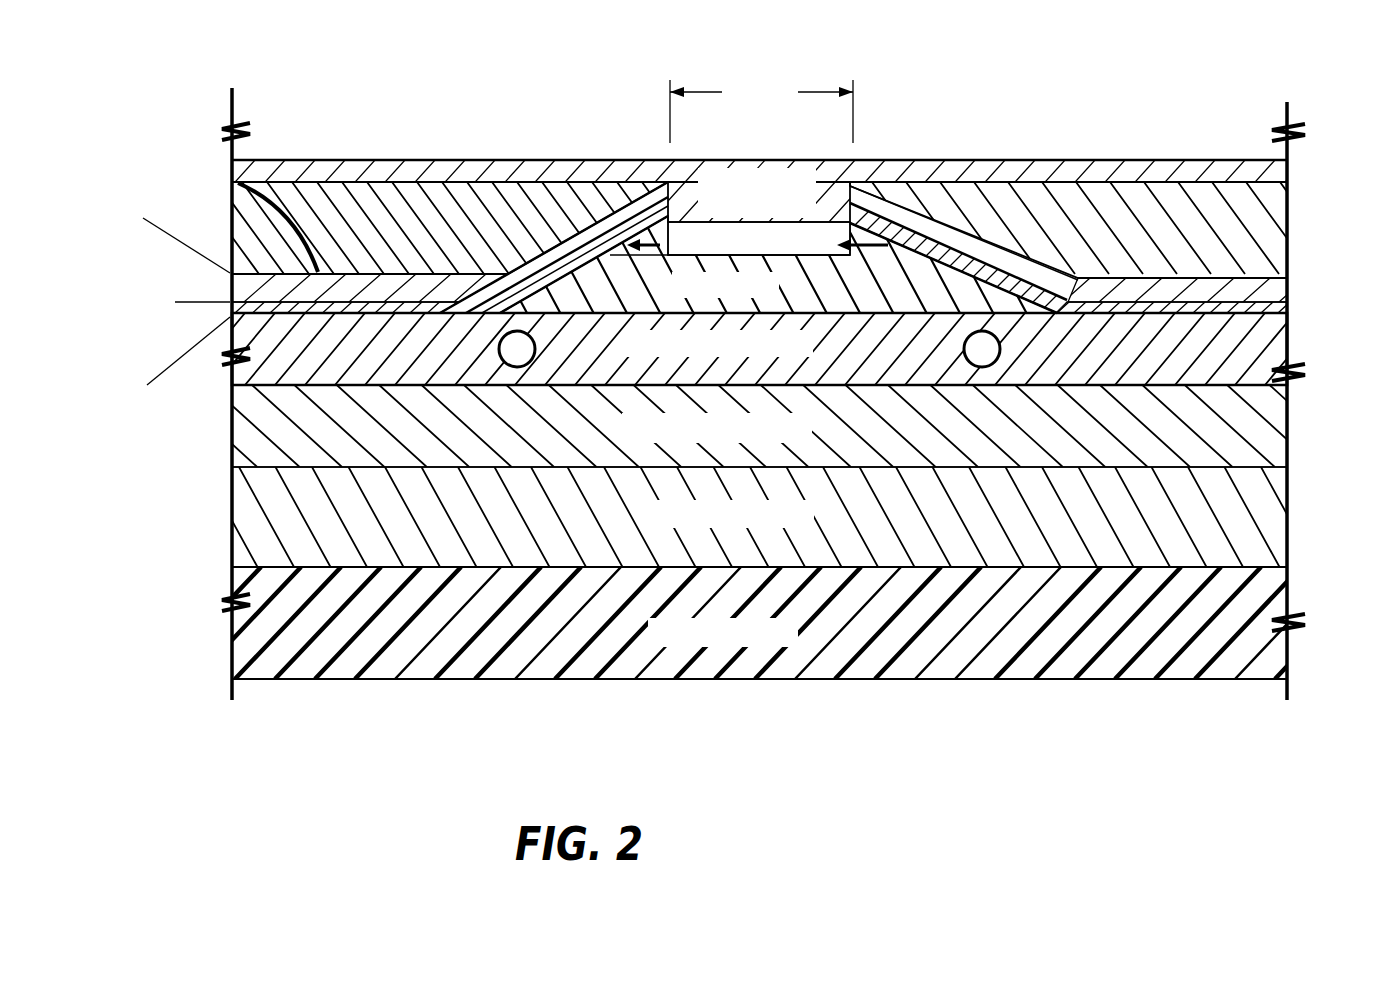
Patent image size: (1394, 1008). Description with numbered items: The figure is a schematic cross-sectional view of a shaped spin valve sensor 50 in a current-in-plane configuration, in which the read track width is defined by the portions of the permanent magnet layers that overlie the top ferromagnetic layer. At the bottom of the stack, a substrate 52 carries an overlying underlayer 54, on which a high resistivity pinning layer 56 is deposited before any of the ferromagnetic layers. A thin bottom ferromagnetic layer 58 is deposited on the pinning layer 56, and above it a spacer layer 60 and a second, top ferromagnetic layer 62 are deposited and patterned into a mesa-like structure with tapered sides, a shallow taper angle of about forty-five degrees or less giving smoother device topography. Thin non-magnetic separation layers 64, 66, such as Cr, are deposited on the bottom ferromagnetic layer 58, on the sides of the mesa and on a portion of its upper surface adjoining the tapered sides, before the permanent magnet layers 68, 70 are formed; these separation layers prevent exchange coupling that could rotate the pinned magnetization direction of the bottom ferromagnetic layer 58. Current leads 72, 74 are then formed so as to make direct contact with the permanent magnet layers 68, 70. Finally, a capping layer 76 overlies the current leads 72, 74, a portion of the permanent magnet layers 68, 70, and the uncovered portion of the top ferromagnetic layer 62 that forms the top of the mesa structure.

The shaped spin valve sensor 50 is at (840, 715).
The substrate 52 is at (308, 680).
The underlayer 54 is at (247, 568).
The pinning layer 56 is at (263, 466).
The bottom ferromagnetic layer 58 is at (1243, 352).
The spacer layer 60 is at (1040, 190).
The top ferromagnetic layer 62 is at (883, 235).
The separation layer 64 is at (553, 255).
The separation layer 66 is at (1025, 277).
The permanent magnet layer 68 is at (233, 180).
The permanent magnet layer 70 is at (1233, 280).
The current lead 72 is at (373, 182).
The current lead 74 is at (973, 287).
The capping layer 76 is at (873, 158).